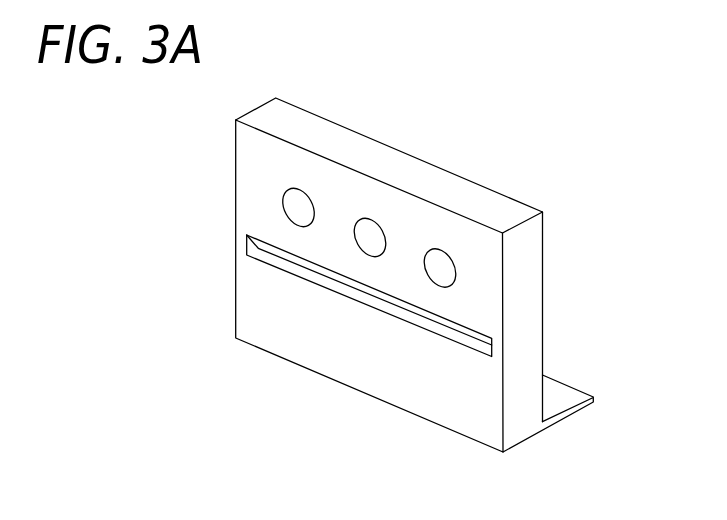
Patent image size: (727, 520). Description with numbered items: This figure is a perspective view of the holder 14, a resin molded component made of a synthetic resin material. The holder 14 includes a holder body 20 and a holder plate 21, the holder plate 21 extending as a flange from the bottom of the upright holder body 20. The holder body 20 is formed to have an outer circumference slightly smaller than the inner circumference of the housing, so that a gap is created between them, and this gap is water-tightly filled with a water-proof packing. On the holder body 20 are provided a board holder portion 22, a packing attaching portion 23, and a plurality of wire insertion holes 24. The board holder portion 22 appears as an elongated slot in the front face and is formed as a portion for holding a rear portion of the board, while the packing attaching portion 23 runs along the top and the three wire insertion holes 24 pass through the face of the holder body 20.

The holder 14 is at (493, 135).
The holder body 20 is at (257, 153).
The holder plate 21 is at (558, 391).
The board holder portion 22 is at (277, 260).
The packing attaching portion 23 is at (382, 160).
The wire insertion holes 24 is at (455, 272).